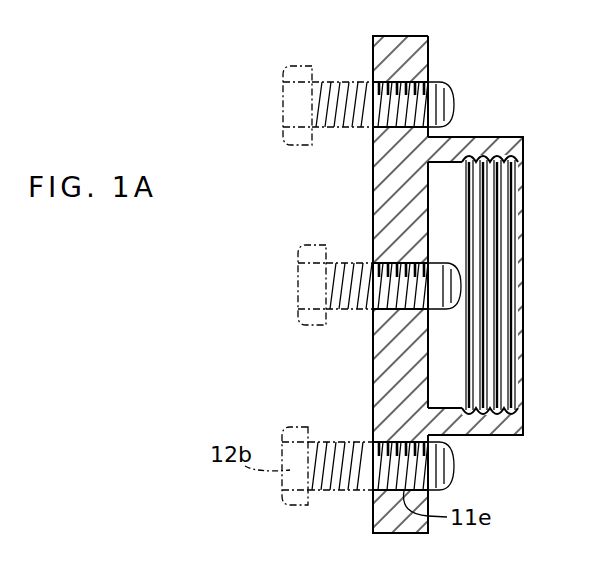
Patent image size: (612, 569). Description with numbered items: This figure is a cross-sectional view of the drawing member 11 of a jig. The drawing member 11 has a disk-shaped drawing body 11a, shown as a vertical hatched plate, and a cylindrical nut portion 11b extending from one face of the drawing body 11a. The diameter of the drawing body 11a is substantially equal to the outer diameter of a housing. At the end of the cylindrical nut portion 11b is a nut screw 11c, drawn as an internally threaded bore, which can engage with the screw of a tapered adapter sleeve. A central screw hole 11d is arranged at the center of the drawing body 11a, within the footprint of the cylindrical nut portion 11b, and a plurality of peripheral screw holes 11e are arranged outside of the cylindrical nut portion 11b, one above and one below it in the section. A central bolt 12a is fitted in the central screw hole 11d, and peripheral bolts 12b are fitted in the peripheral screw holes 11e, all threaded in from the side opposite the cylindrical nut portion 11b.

The drawing member 11 is at (370, 379).
The drawing body 11a is at (386, 202).
The cylindrical nut portion 11b is at (456, 140).
The nut screw 11c is at (503, 158).
The central screw hole 11d is at (386, 340).
The peripheral screw holes 11e is at (395, 81).
The central bolt 12a is at (300, 279).
The peripheral bolts 12b is at (290, 100).